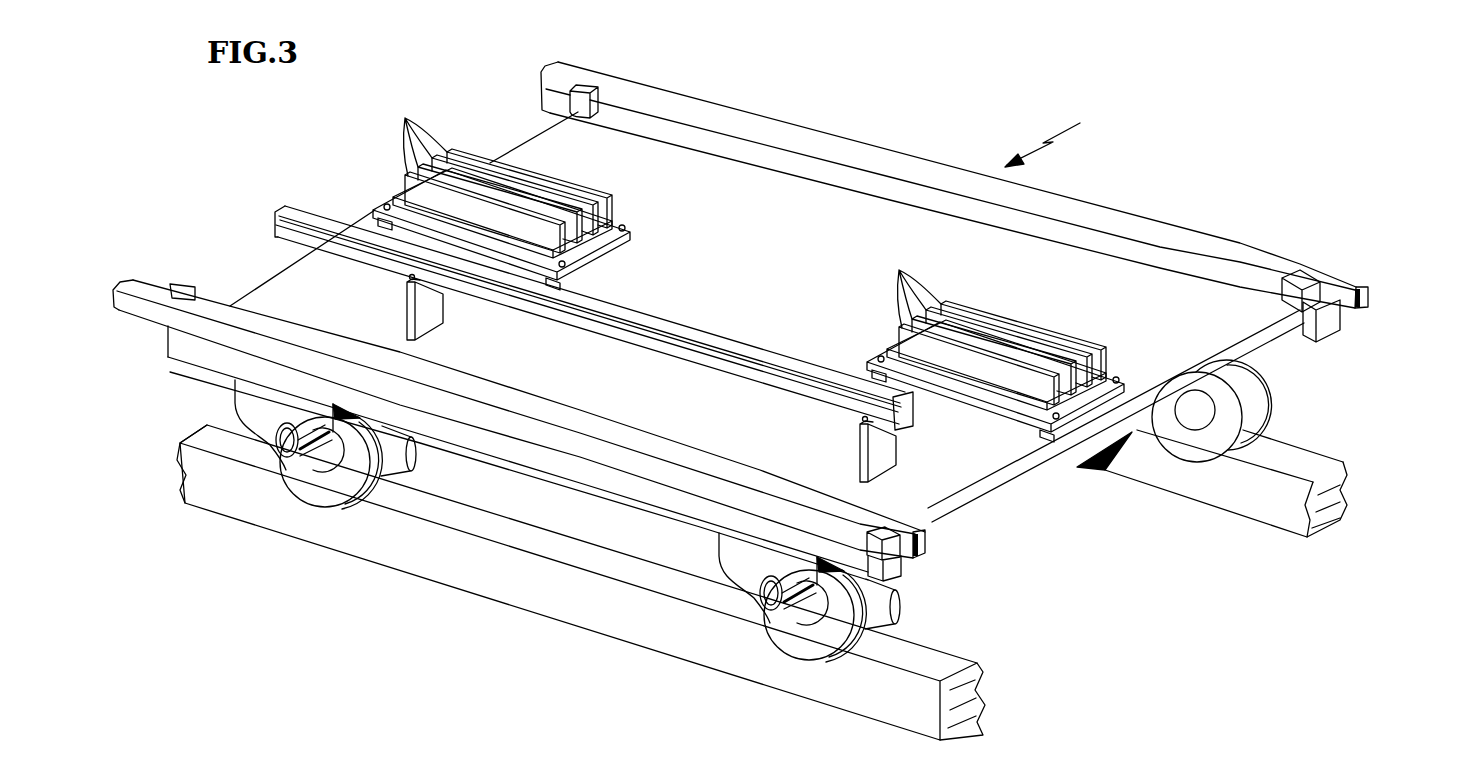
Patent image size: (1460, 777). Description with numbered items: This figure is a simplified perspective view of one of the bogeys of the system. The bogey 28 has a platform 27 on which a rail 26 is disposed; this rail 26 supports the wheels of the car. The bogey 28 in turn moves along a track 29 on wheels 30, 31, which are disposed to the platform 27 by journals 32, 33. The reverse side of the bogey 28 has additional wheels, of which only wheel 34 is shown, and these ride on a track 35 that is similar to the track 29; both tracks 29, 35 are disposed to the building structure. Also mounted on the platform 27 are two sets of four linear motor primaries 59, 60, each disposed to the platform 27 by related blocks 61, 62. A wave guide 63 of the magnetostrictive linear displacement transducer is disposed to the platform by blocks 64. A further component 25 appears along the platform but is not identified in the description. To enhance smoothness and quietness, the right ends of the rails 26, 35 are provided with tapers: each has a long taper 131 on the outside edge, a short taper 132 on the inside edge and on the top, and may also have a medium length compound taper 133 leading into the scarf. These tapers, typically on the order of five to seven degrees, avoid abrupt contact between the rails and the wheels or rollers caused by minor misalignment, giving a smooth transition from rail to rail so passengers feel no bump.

The rear side rail 25 is at (860, 153).
The rail 26 is at (507, 402).
The platform 27 is at (705, 221).
The bogey 28 is at (1060, 131).
The track 29 is at (575, 600).
The wheel 30 is at (332, 500).
The wheel 31 is at (820, 650).
The journal 32 is at (235, 387).
The journal 33 is at (717, 540).
The wheel 34 is at (1250, 402).
The track 35 is at (1230, 498).
The linear motor primaries 59 is at (494, 171).
The linear motor primaries 60 is at (995, 338).
The block 61 is at (593, 263).
The block 62 is at (873, 373).
The wave guide 63 is at (690, 331).
The block 64 is at (400, 288).
The long taper 131 is at (1338, 279).
The short taper 132 is at (1368, 290).
The compound taper 133 is at (1280, 292).